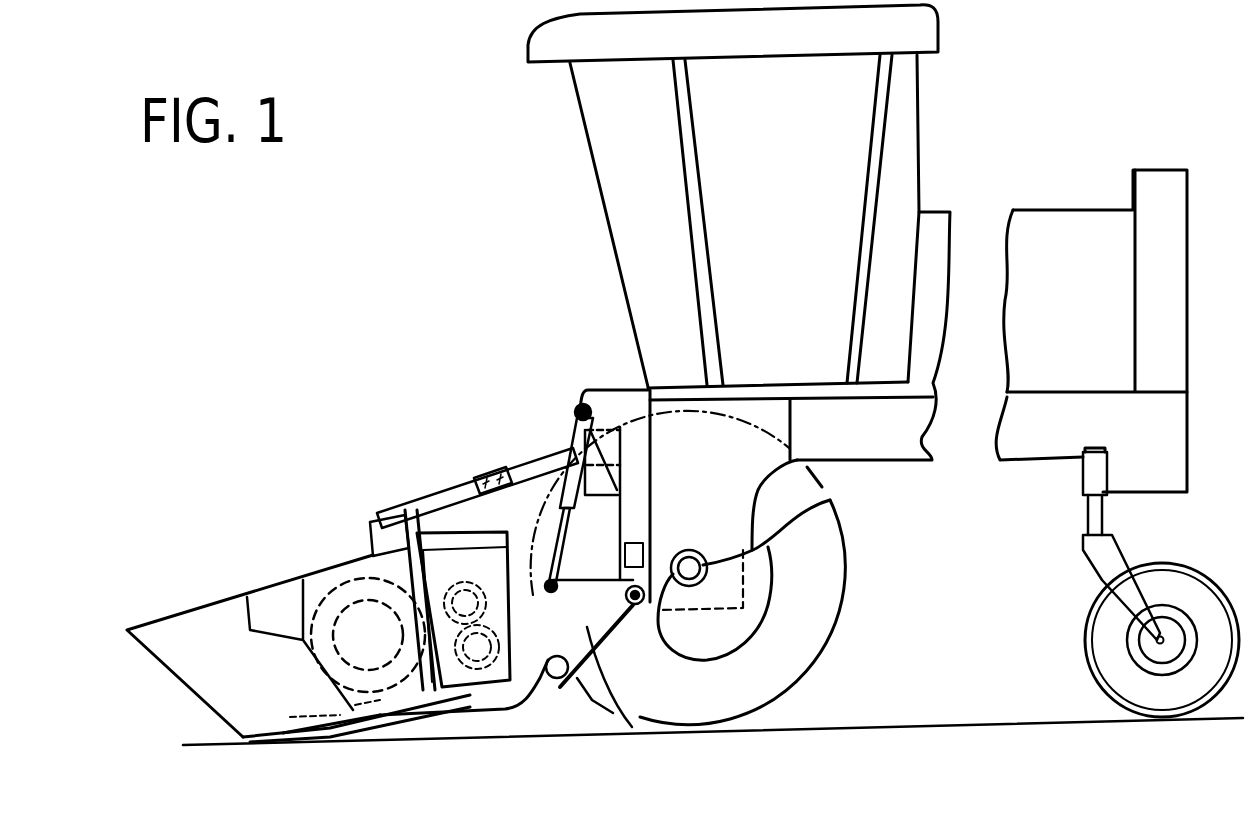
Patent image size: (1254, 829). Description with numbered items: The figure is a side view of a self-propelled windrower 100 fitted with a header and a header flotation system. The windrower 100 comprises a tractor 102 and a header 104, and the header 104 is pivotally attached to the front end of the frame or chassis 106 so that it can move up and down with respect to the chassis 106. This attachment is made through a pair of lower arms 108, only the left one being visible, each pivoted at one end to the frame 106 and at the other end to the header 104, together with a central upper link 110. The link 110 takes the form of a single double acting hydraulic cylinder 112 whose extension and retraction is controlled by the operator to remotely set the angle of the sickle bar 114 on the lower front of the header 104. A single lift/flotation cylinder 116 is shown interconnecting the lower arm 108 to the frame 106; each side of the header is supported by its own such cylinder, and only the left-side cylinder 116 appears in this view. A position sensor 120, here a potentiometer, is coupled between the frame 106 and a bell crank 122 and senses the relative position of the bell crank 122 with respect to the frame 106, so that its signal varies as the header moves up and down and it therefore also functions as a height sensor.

The self-propelled windrower 100 is at (509, 168).
The tractor 102 is at (1056, 163).
The header 104 is at (397, 428).
The frame or chassis 106 is at (640, 502).
The lower arm 108 is at (527, 690).
The central upper link 110 is at (481, 459).
The double acting hydraulic cylinder 112 is at (522, 462).
The sickle bar 114 is at (327, 733).
The lift/flotation cylinder 116 is at (572, 497).
The position sensor 120 is at (653, 550).
The bell crank 122 is at (632, 722).